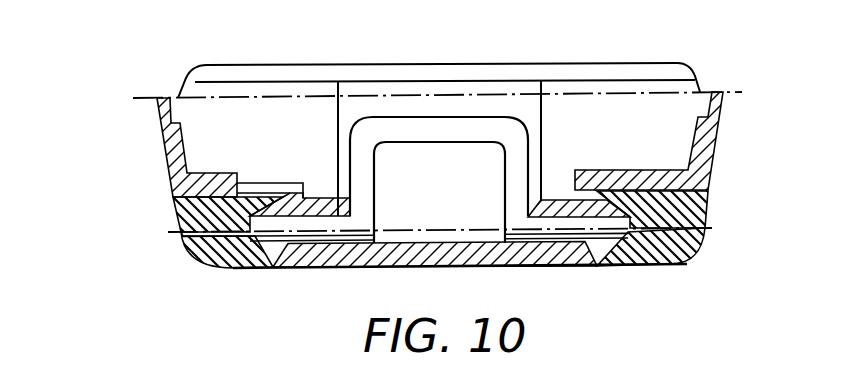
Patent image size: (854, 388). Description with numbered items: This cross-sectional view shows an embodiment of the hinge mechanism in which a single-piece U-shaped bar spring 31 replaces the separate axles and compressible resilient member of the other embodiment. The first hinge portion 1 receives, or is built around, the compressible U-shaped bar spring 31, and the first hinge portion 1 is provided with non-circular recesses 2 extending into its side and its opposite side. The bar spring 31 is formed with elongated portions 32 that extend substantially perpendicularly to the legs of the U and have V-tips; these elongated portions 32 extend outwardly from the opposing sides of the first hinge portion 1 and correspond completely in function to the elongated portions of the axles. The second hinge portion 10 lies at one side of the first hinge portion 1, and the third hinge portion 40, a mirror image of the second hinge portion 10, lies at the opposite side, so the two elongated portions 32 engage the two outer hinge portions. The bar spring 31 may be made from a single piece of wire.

The first hinge portion 1 is at (339, 282).
The non-circular recess 2 is at (683, 253).
The second hinge portion 10 is at (722, 202).
The U-shaped bar spring 31 is at (410, 118).
The elongated portion 32 is at (264, 268).
The third hinge portion 40 is at (163, 216).